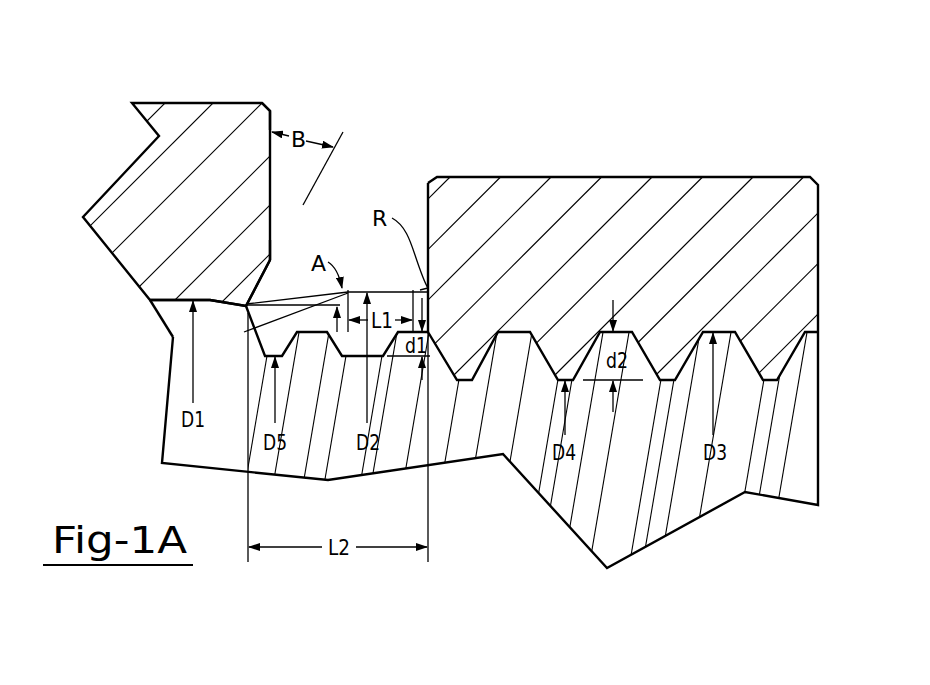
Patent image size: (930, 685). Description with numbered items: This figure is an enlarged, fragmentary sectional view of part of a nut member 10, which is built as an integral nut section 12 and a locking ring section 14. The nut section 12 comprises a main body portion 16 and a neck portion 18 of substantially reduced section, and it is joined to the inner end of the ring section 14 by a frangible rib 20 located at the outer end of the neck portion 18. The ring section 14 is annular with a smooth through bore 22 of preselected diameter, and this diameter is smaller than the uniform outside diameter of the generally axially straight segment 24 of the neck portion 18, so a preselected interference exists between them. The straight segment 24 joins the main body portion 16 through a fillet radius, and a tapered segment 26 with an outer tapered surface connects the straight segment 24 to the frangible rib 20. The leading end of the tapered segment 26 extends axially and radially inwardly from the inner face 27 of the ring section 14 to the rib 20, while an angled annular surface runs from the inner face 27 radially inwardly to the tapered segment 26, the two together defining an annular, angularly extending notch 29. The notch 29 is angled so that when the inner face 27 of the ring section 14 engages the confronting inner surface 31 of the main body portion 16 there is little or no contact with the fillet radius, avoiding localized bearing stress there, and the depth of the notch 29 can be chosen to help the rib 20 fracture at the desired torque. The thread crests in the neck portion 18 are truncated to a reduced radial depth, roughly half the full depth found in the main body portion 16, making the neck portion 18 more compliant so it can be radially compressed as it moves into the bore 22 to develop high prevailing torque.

The nut member 10 is at (652, 172).
The nut section 12 is at (818, 65).
The locking ring section 14 is at (150, 108).
The main body portion 16 is at (818, 110).
The neck portion 18 is at (428, 581).
The frangible rib 20 is at (233, 307).
The through bore 22 is at (160, 323).
The straight segment 24 is at (417, 289).
The tapered segment 26 is at (345, 248).
The inner face 27 is at (270, 117).
The notch 29 is at (258, 285).
The inner surface 31 is at (428, 205).